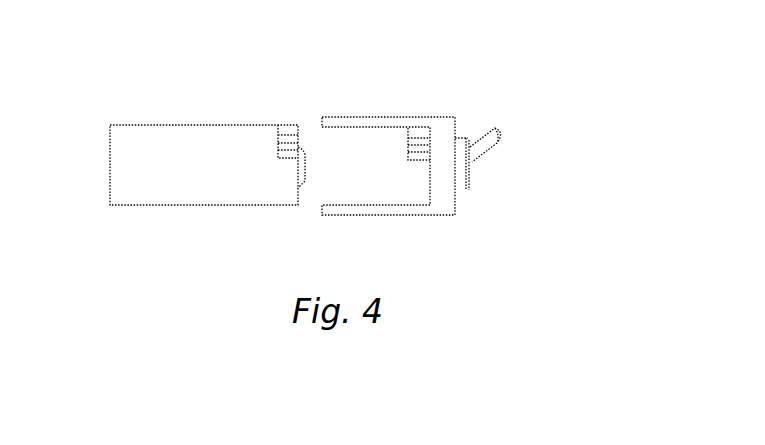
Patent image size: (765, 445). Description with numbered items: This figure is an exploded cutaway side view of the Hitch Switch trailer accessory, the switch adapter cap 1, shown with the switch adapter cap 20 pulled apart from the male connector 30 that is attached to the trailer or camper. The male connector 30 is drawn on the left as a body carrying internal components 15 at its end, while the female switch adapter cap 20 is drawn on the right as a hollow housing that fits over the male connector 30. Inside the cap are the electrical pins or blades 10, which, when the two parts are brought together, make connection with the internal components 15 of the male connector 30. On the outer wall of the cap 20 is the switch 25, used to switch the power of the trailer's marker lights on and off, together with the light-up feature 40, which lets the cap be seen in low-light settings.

The switch adapter cap 1 is at (532, 212).
The electrical pins or blades 10 is at (408, 157).
The internal components 15 is at (278, 158).
The switch adapter cap 20 is at (433, 121).
The switch 25 is at (497, 142).
The male connector 30 is at (137, 148).
The light-up feature 40 is at (460, 185).